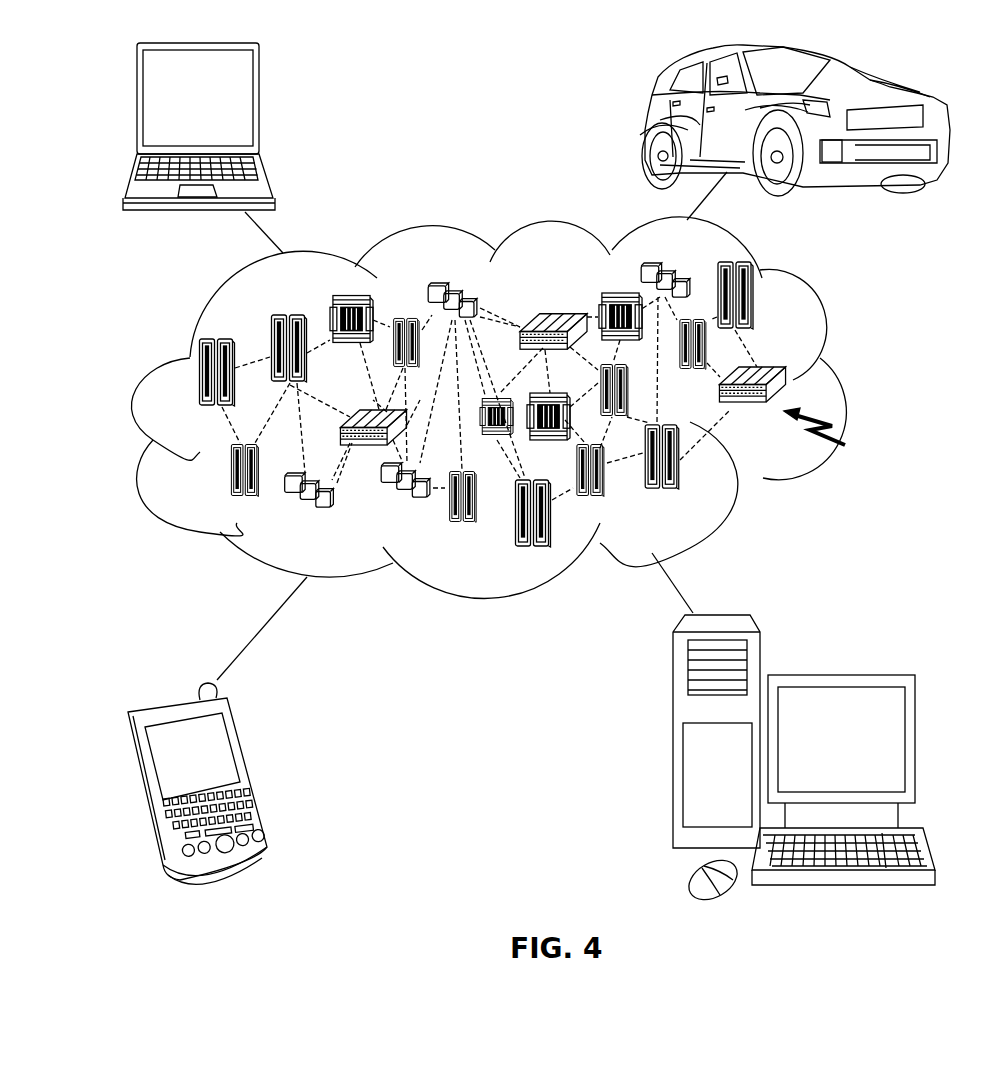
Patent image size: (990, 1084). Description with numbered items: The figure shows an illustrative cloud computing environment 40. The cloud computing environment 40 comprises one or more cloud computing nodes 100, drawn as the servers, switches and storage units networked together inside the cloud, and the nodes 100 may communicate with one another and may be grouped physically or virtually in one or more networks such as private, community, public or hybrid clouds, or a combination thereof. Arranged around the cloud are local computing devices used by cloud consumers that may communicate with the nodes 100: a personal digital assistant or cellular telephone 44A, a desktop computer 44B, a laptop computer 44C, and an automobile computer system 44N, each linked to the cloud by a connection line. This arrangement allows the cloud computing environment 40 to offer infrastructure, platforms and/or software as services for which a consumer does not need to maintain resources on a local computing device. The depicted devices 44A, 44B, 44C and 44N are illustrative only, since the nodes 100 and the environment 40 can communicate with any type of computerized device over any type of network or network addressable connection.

The cloud computing environment 40 is at (843, 383).
The cloud computing nodes 100 is at (839, 432).
The personal digital assistant or cellular telephone 44A is at (250, 770).
The desktop computer 44B is at (840, 672).
The laptop computer 44C is at (262, 105).
The automobile computer system 44N is at (648, 122).